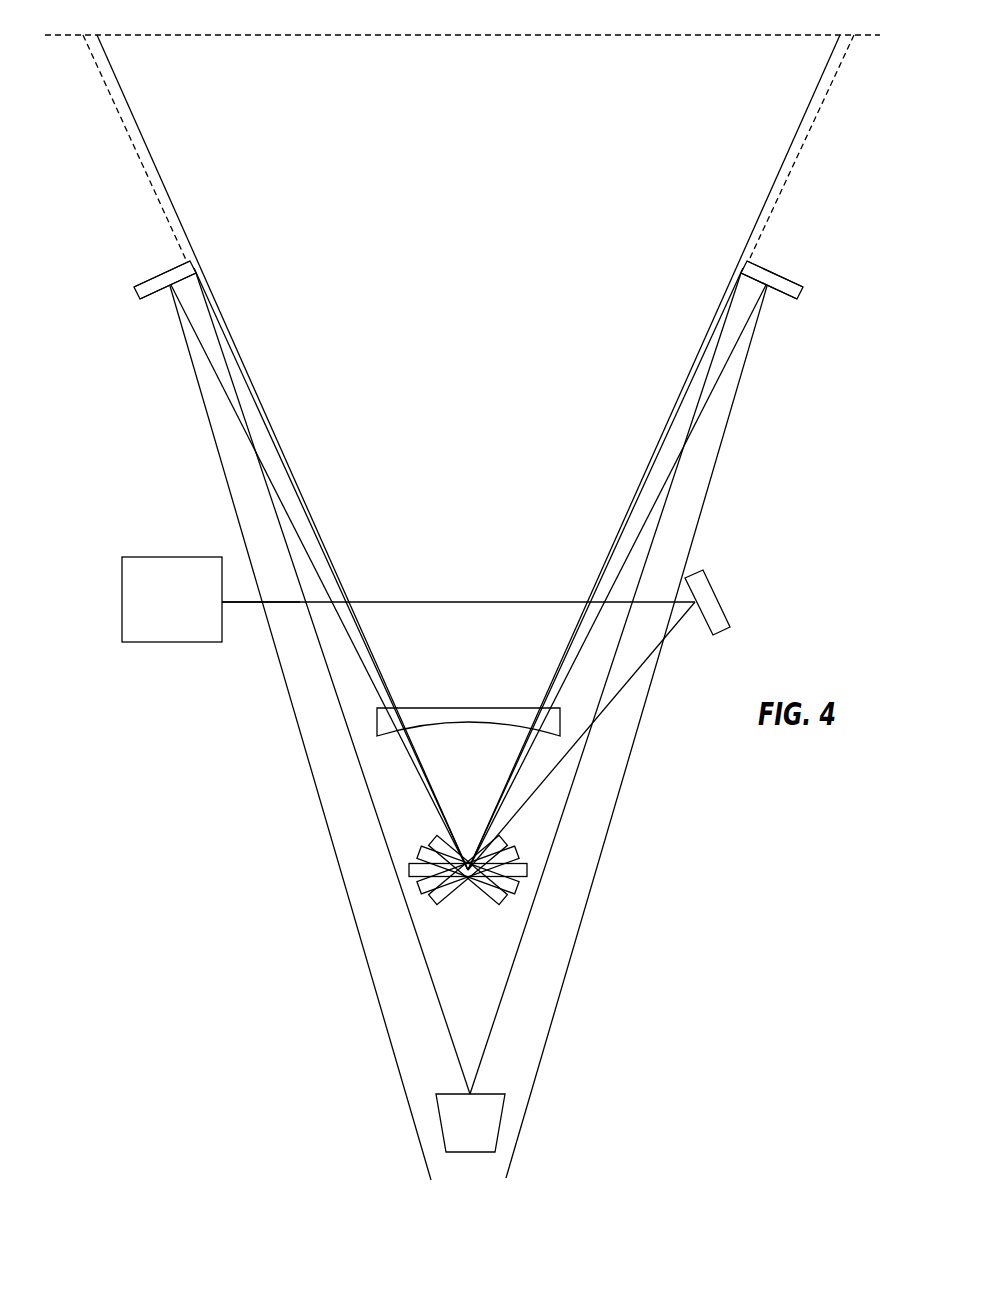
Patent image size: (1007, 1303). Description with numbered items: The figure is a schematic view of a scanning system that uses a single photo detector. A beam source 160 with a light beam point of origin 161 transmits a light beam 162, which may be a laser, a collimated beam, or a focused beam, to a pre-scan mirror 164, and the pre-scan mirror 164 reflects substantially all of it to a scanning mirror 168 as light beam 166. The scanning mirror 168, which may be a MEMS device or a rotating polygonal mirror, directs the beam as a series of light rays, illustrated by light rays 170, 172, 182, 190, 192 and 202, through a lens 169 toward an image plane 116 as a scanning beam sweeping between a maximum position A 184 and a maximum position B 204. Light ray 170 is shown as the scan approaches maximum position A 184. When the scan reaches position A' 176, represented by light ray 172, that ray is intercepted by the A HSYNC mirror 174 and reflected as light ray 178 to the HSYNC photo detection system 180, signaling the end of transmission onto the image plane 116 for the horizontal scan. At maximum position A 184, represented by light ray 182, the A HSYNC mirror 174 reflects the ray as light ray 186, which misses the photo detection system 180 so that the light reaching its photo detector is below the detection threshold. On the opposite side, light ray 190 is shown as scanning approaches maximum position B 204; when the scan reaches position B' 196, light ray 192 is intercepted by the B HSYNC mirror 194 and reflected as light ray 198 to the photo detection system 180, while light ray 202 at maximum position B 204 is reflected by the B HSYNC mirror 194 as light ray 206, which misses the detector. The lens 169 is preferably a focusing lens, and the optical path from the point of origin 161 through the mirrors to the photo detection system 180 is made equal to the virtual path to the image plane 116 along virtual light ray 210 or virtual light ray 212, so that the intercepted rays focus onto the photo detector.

The image plane 116 is at (402, 38).
The beam source 160 is at (168, 643).
The light beam point of origin 161 is at (224, 604).
The light beam 162 is at (405, 601).
The pre-scan mirror 164 is at (713, 588).
The light beam 166 is at (545, 783).
The scanning mirror 168 is at (448, 887).
The lens 169 is at (477, 708).
The light ray 170 is at (755, 232).
The light ray 172 is at (700, 353).
The A HSYNC mirror 174 is at (793, 280).
The position A' 176 is at (748, 262).
The light ray 178 is at (665, 510).
The HSYNC photo detection system 180 is at (470, 1153).
The light ray 182 is at (722, 372).
The maximum position A 184 is at (767, 277).
The light ray 186 is at (735, 410).
The light ray 190 is at (185, 230).
The light ray 192 is at (215, 313).
The B HSYNC mirror 194 is at (136, 289).
The position B' 196 is at (178, 282).
The light ray 198 is at (281, 530).
The light ray 202 is at (215, 370).
The maximum position B 204 is at (150, 277).
The light ray 206 is at (207, 420).
The virtual light ray 210 is at (827, 100).
The virtual light ray 212 is at (121, 118).